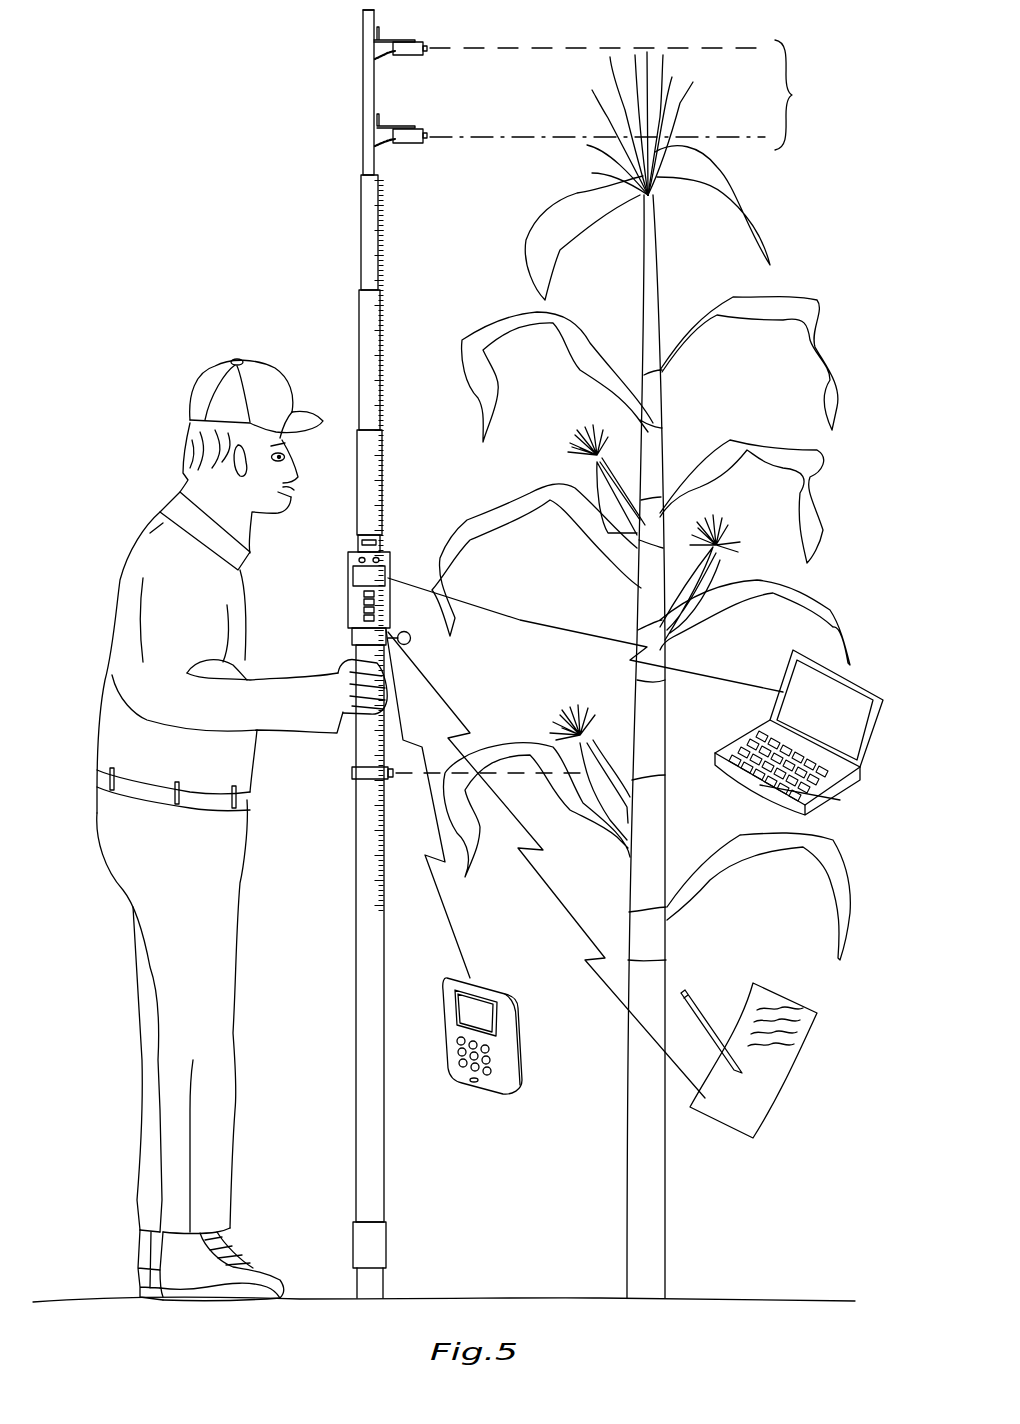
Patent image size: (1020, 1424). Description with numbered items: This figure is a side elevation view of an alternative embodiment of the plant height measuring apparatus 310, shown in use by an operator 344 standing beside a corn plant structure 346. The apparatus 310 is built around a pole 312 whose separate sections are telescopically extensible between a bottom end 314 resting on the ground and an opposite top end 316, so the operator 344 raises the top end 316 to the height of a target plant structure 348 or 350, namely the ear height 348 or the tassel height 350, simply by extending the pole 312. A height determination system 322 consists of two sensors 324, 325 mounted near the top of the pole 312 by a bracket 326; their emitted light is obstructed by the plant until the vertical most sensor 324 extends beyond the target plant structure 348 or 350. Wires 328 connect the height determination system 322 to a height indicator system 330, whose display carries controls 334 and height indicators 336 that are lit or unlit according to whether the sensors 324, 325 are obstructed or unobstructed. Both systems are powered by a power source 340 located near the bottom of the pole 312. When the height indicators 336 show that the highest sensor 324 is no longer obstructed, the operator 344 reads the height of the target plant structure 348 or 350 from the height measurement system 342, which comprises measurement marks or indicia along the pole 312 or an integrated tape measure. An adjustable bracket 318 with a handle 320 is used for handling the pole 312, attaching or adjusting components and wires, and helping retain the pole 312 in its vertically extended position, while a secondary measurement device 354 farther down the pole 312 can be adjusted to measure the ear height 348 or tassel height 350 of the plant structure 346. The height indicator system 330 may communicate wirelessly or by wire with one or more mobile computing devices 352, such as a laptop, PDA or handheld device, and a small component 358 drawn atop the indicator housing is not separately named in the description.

The apparatus 310 is at (236, 78).
The pole 312 is at (357, 262).
The bottom end 314 is at (387, 1296).
The top end 316 is at (362, 11).
The bracket 318 is at (352, 636).
The handle 320 is at (412, 639).
The height determination system 322 is at (806, 93).
The sensor 324 is at (424, 54).
The sensor 325 is at (424, 141).
The bracket 326 is at (387, 41).
The wires 328 is at (378, 58).
The height indicator system 330 is at (410, 497).
The controls 334 is at (352, 554).
The height indicators 336 is at (380, 617).
The power source 340 is at (385, 1243).
The height measurement system 342 is at (383, 208).
The operator 344 is at (150, 555).
The plant structure 346 is at (628, 1231).
The target plant structure 348 is at (590, 463).
The target plant structure 350 is at (675, 55).
The mobile computing devices 352 is at (345, 595).
The secondary measurement device 354 is at (343, 770).
The sensor unit 358 is at (378, 541).